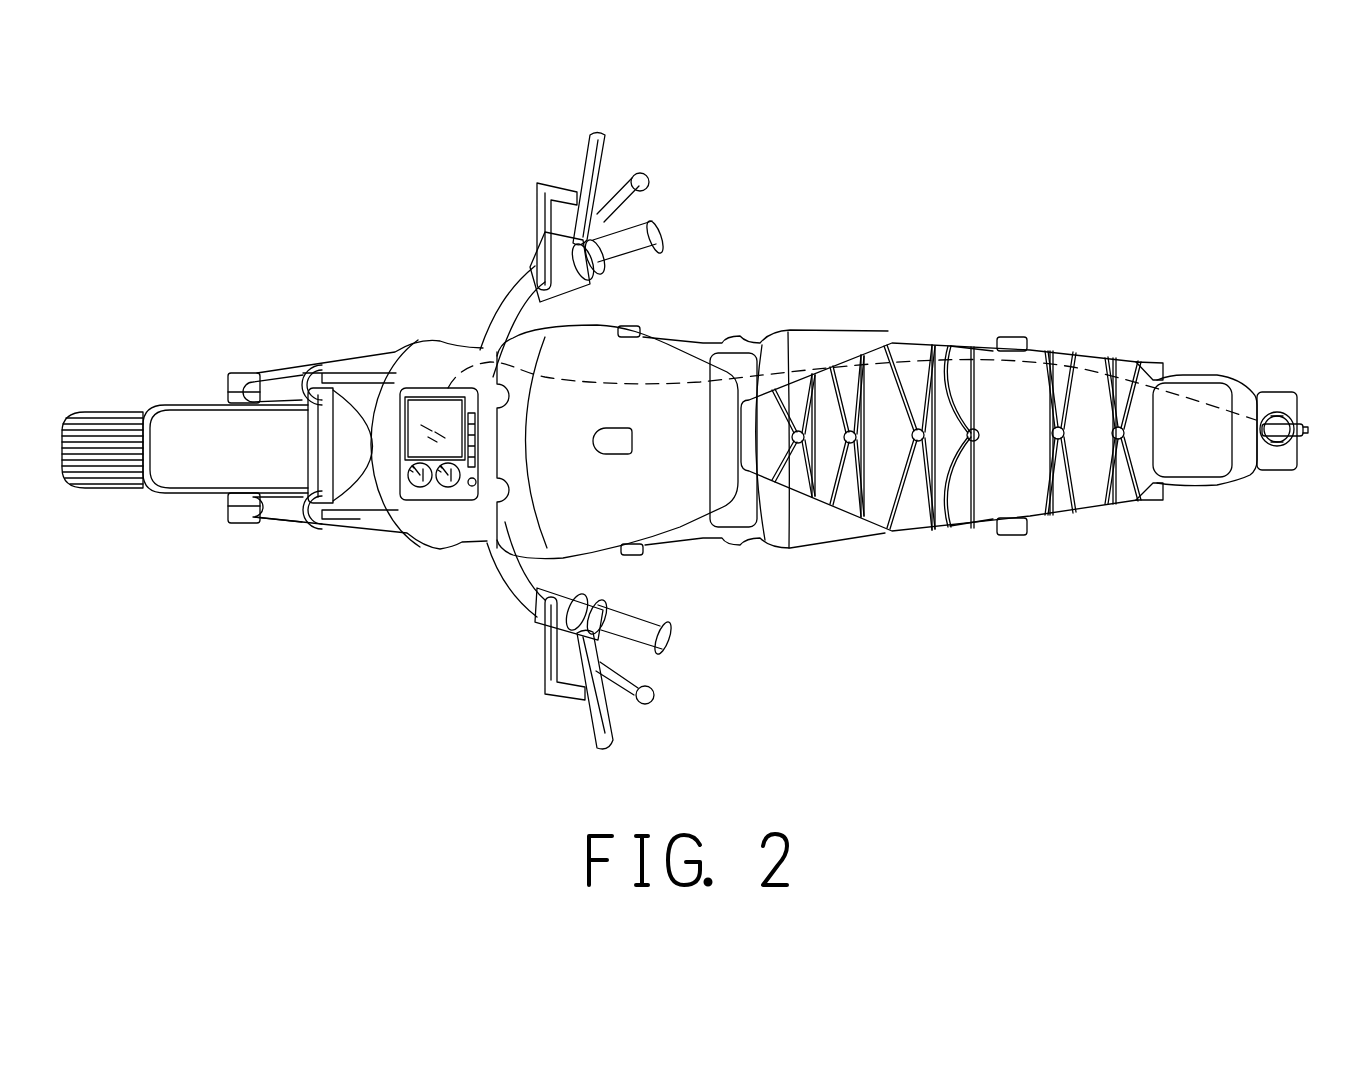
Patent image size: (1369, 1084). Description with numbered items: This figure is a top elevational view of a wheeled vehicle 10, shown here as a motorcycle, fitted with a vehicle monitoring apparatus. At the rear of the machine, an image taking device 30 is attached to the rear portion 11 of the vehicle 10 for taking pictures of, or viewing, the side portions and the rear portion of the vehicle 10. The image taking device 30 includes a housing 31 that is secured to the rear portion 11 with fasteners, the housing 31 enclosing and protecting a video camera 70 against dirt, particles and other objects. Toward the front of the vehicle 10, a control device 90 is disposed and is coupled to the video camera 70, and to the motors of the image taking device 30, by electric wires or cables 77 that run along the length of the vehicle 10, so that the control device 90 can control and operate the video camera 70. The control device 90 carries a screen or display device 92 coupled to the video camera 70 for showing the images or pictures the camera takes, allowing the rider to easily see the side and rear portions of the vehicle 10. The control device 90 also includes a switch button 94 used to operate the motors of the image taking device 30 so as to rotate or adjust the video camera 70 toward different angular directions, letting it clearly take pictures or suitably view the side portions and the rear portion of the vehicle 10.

The vehicle 10 is at (715, 435).
The rear portion 11 is at (1256, 390).
The image taking device 30 is at (1277, 448).
The housing 31 is at (1300, 393).
The video camera 70 is at (1291, 416).
The electric wires or cables 77 is at (686, 378).
The control device 90 is at (374, 448).
The display device 92 is at (415, 445).
The switch button 94 is at (471, 487).